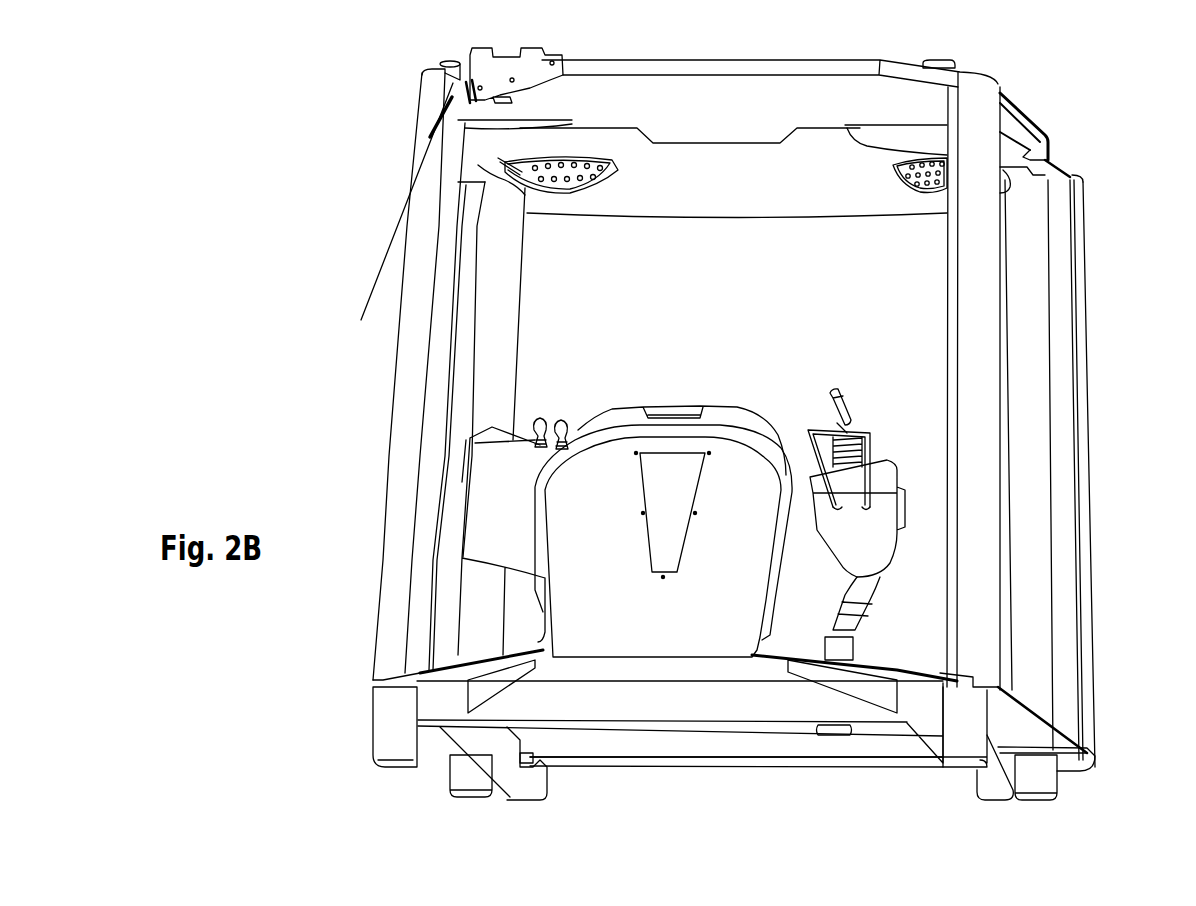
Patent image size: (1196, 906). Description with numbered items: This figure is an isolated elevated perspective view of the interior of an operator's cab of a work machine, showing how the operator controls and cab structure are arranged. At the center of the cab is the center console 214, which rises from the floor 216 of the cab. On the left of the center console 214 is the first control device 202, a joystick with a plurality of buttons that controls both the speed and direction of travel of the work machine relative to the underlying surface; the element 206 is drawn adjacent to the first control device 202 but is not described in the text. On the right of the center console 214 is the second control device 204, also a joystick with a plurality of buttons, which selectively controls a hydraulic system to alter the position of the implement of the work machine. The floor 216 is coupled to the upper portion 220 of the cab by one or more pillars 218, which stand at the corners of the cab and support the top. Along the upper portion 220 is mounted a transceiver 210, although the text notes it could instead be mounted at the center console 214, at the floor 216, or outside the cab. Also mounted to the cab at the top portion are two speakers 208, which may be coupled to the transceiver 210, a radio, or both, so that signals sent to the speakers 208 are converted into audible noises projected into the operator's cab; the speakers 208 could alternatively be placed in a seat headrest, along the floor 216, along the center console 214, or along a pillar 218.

The first control device 202 is at (553, 410).
The second control device 204 is at (836, 388).
The knobs 206 is at (563, 420).
The speaker 208 is at (650, 180).
The transceiver 210 is at (615, 150).
The center console 214 is at (657, 633).
The floor 216 is at (908, 665).
The pillar 218 is at (410, 411).
The upper portion 220 is at (727, 203).